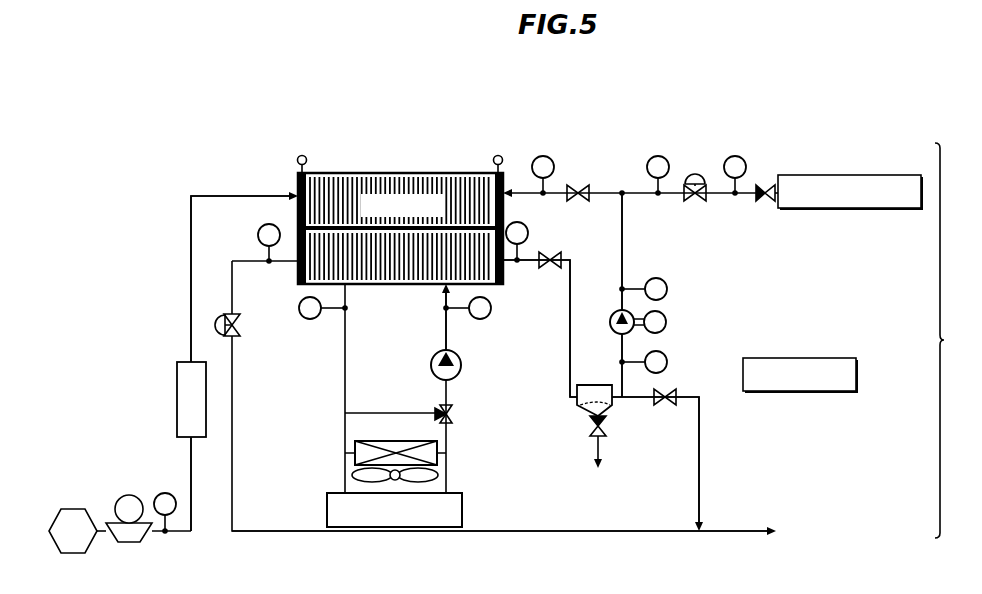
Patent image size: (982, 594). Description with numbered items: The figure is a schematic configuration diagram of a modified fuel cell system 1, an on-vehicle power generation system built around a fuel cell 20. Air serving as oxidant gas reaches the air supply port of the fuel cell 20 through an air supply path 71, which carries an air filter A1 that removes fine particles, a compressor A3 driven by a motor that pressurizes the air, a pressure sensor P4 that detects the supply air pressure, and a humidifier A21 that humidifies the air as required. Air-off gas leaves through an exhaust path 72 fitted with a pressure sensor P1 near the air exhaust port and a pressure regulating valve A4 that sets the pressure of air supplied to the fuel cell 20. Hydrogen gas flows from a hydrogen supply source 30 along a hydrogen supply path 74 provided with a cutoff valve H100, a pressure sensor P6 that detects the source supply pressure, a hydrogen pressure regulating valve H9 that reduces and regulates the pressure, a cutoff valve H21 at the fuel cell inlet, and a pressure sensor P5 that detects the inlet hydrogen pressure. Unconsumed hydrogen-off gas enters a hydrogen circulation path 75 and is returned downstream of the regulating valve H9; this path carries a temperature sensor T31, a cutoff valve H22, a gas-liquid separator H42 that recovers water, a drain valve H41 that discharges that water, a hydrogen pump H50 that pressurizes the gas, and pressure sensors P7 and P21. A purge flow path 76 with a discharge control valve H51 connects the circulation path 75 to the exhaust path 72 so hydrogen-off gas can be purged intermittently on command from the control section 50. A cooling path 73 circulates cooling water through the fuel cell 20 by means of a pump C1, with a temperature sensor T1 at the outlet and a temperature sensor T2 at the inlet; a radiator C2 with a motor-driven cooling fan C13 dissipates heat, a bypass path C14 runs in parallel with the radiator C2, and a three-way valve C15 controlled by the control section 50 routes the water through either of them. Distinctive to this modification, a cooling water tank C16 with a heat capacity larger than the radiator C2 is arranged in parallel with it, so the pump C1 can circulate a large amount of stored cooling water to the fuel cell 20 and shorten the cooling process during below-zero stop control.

The fuel cell 20 is at (425, 173).
The pressure sensor P5 is at (542, 156).
The cutoff valve H21 is at (578, 185).
The hydrogen supply path 74 is at (614, 190).
The pressure sensor P1 is at (659, 156).
The hydrogen pressure regulating valve H9 is at (697, 173).
The pressure sensor P6 is at (736, 156).
The hydrogen supply source 30 is at (838, 175).
The cutoff valve H100 is at (763, 203).
The fuel cell system 1 is at (945, 340).
The control section 50 is at (806, 358).
The air supply path 71 is at (191, 272).
The pressure regulating valve A4 is at (217, 314).
The temperature sensor T1 is at (299, 306).
The humidifier A21 is at (177, 397).
The pressure sensor P4 is at (160, 493).
The air filter A1 is at (77, 531).
The compressor A3 is at (148, 518).
The exhaust path 72 is at (302, 533).
The temperature sensor T2 is at (492, 307).
The cooling path 73 is at (447, 330).
The pump C1 is at (461, 367).
The bypass path C14 is at (402, 412).
The three-way valve C15 is at (456, 414).
The radiator C2 is at (394, 440).
The cooling fan C13 is at (440, 472).
The cooling water tank C16 is at (464, 507).
The temperature sensor T31 is at (528, 233).
The cutoff valve H22 is at (556, 257).
The hydrogen circulation path 75 is at (570, 358).
The pressure sensor P7 is at (668, 287).
The hydrogen pump H50 is at (609, 318).
The pressure sensor P21 is at (668, 358).
The gas-liquid separator H42 is at (596, 384).
The drain valve H41 is at (590, 426).
The discharge control valve H51 is at (665, 410).
The purge flow path 76 is at (699, 488).